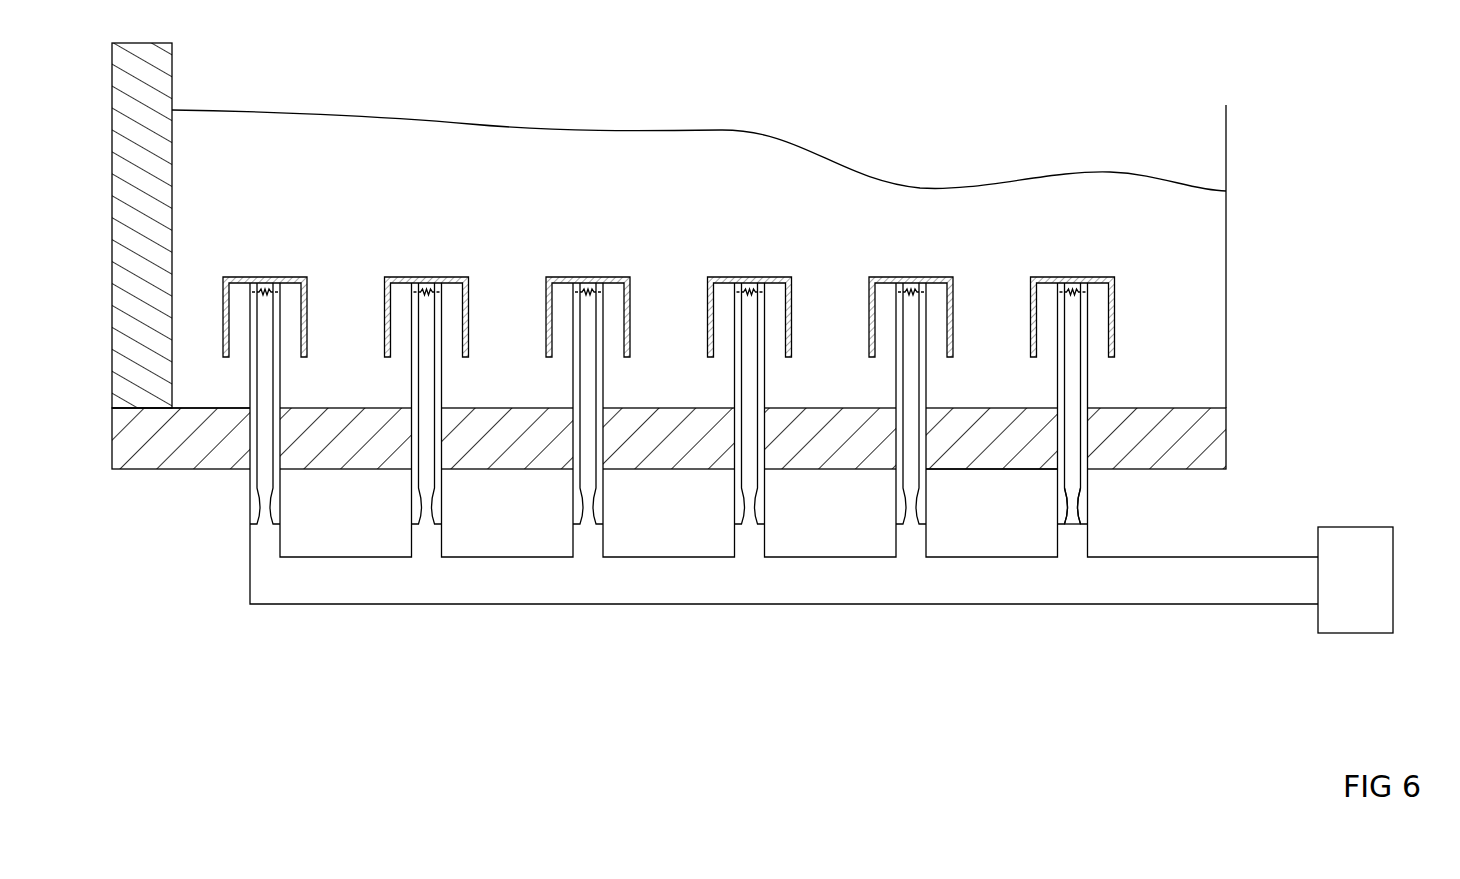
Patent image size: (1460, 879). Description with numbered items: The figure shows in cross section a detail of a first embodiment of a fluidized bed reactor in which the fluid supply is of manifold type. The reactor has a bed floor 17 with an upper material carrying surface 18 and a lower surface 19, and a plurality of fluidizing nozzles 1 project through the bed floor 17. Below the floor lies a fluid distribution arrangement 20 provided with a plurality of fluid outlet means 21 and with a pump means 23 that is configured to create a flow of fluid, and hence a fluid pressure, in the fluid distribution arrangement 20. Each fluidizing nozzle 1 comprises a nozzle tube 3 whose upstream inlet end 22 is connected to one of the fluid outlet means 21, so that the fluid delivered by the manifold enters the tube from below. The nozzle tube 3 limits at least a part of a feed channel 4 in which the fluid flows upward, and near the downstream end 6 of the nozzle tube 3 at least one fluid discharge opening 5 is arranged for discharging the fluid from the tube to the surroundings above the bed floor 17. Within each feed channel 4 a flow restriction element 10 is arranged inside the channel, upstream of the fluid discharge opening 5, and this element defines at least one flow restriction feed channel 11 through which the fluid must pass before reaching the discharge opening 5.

The fluidizing nozzle 1 is at (948, 236).
The nozzle tube 3 is at (1177, 404).
The feed channel 4 is at (1185, 403).
The fluid discharge opening 5 is at (1179, 290).
The downstream end 6 is at (1168, 269).
The flow restriction element 10 is at (1203, 499).
The flow restriction feed channel 11 is at (1102, 666).
The bed floor 17 is at (1212, 432).
The upper material carrying surface 18 is at (819, 405).
The lower surface 19 is at (837, 473).
The fluid distribution arrangement 20 is at (1203, 636).
The fluid outlet means 21 is at (987, 645).
The upstream inlet end 22 is at (1179, 518).
The pump means 23 is at (1355, 580).